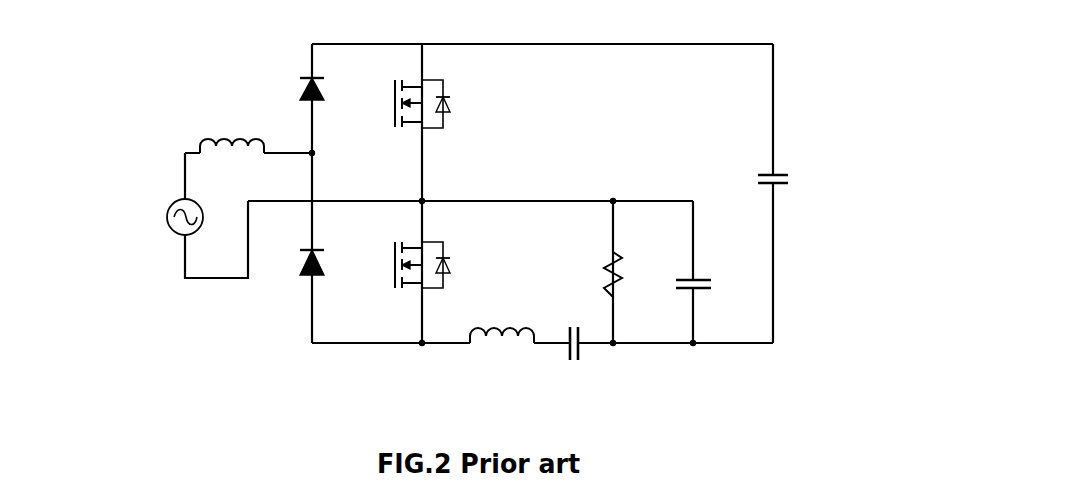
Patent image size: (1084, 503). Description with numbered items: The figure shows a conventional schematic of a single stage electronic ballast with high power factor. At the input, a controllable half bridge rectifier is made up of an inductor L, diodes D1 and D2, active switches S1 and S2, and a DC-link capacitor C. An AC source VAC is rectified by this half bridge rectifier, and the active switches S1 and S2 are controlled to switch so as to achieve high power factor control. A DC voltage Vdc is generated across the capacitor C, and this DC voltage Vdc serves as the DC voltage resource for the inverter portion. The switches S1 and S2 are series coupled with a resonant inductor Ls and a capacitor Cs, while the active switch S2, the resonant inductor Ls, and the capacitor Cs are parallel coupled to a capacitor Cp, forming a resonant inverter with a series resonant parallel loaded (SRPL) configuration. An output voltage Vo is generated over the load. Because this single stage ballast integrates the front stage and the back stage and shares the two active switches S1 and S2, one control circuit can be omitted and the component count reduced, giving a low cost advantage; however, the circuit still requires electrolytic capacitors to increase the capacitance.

The AC source VAC is at (166, 217).
The inductor L is at (232, 129).
The diode D1 is at (295, 93).
The diode D2 is at (295, 272).
The active switch S1 is at (424, 121).
The active switch S2 is at (424, 283).
The resonant inductor Ls is at (502, 320).
The capacitor Cs is at (573, 329).
The output voltage Vo is at (628, 272).
The capacitor Cp is at (707, 290).
The DC-link capacitor C is at (782, 179).
The DC voltage Vdc is at (738, 178).